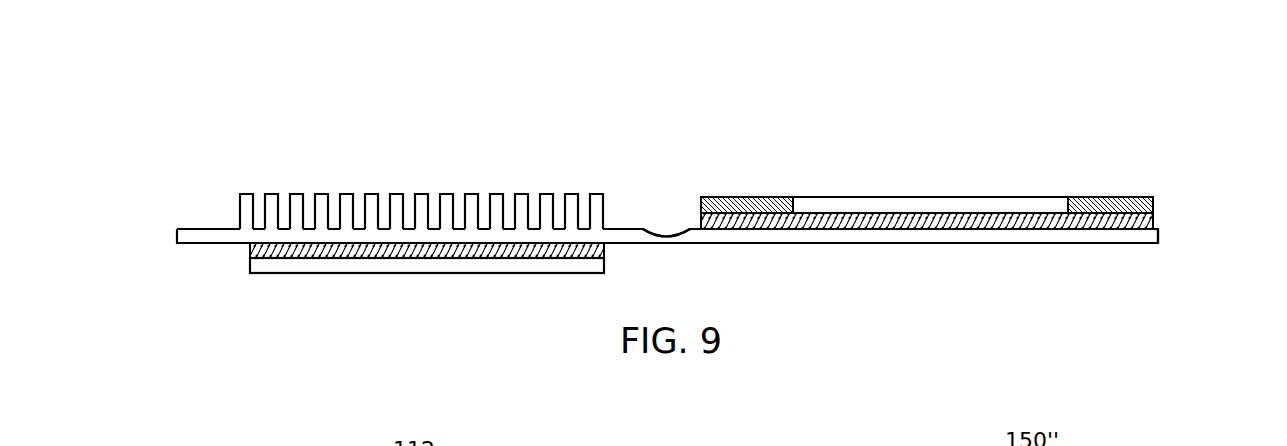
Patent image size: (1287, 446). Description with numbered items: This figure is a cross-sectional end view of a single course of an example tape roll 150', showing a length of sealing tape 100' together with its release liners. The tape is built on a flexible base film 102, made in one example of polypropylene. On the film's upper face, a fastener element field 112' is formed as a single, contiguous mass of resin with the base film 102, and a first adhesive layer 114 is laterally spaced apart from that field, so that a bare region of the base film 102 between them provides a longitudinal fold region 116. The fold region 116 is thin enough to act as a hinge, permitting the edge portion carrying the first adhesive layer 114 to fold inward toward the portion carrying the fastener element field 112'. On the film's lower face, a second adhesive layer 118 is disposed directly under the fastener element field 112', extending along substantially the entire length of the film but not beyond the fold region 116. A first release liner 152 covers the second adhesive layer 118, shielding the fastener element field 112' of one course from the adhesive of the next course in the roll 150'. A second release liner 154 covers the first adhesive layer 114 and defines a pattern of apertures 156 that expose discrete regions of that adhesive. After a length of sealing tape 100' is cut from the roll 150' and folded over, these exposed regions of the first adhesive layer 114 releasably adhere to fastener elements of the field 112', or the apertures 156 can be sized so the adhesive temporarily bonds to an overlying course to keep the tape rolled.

The sealing tape 100' is at (1186, 259).
The flexible base film 102 is at (207, 229).
The fastener element field 112' is at (421, 158).
The first adhesive layer 114 is at (1165, 220).
The longitudinal fold region 116 is at (667, 225).
The second adhesive layer 118 is at (243, 252).
The tape roll 150' is at (927, 138).
The first release liner 152 is at (248, 272).
The second release liner 154 is at (752, 197).
The apertures 156 is at (858, 197).